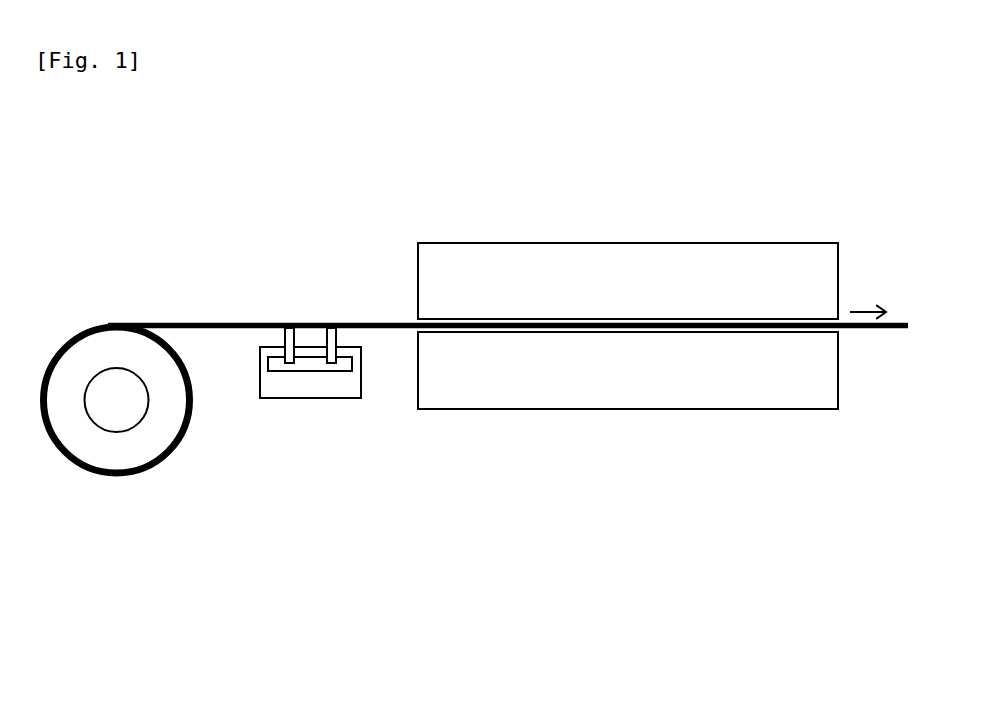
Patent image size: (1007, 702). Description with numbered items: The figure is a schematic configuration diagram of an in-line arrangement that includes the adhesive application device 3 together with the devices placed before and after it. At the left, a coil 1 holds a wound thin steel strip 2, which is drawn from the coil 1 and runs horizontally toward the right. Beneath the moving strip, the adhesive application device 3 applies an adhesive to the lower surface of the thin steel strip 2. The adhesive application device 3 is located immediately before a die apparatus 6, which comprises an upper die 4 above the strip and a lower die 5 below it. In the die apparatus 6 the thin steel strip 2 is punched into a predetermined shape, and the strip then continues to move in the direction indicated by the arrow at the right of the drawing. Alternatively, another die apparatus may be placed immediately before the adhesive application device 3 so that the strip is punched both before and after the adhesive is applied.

The coil 1 is at (164, 487).
The thin steel strip 2 is at (220, 322).
The adhesive application device 3 is at (285, 413).
The upper die 4 is at (418, 281).
The lower die 5 is at (418, 372).
The die apparatus 6 is at (683, 207).